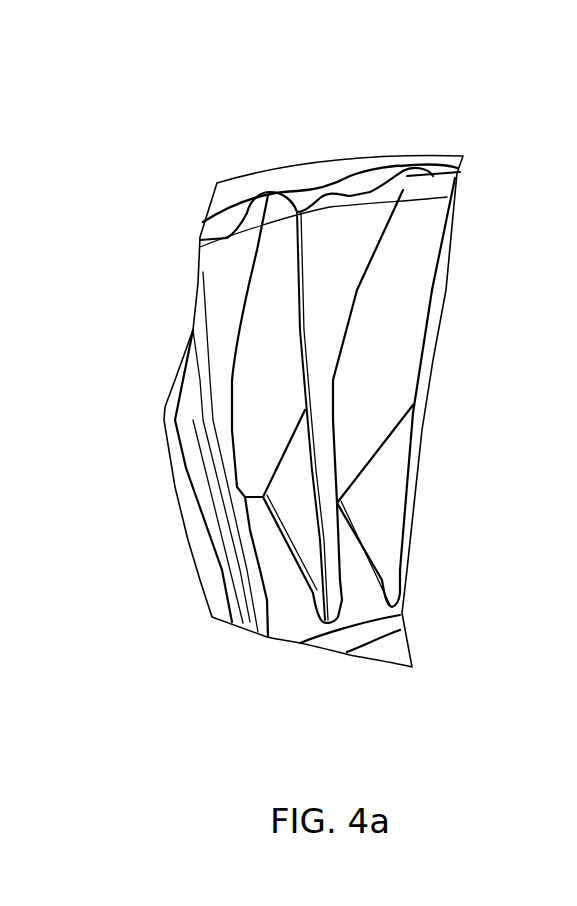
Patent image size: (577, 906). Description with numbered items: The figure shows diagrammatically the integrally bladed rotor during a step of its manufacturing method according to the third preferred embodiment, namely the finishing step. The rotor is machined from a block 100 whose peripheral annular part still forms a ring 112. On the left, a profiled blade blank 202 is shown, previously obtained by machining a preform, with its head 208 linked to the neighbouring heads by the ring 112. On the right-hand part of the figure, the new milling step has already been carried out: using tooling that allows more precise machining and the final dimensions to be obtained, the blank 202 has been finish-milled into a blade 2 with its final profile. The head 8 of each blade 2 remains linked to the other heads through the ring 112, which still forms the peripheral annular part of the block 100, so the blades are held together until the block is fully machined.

The block 100 is at (232, 140).
The ring 112 is at (312, 180).
The head of blank 208 is at (197, 237).
The head of blade 8 is at (380, 207).
The blade 2 is at (333, 327).
The profiled blade blank 202 is at (200, 380).